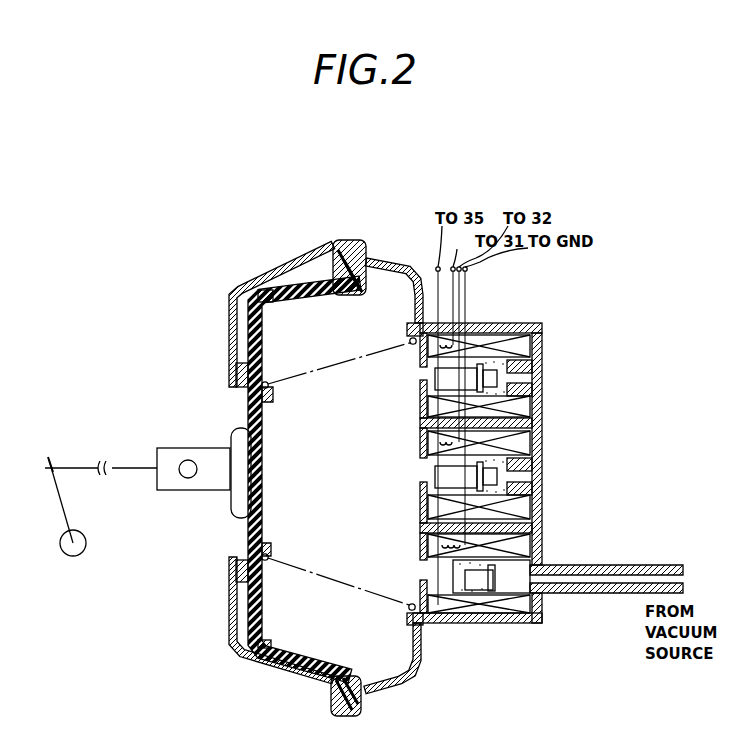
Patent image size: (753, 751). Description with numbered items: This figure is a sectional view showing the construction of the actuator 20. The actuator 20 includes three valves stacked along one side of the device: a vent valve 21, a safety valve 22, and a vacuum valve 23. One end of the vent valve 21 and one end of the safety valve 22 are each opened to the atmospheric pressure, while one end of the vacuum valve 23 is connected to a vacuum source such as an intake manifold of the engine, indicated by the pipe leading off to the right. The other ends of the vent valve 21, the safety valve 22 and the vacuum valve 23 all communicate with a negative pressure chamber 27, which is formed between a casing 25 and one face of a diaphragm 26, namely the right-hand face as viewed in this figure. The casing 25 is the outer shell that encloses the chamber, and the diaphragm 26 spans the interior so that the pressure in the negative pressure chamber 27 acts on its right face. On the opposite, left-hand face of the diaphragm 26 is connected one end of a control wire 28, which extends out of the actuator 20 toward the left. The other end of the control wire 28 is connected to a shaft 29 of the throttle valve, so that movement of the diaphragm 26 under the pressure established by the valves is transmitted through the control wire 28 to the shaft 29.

The actuator 20 is at (378, 250).
The vent valve 21 is at (538, 378).
The safety valve 22 is at (535, 477).
The vacuum valve 23 is at (528, 587).
The casing 25 is at (423, 663).
The diaphragm 26 is at (317, 667).
The negative pressure chamber 27 is at (356, 486).
The control wire 28 is at (128, 470).
The shaft 29 is at (73, 556).